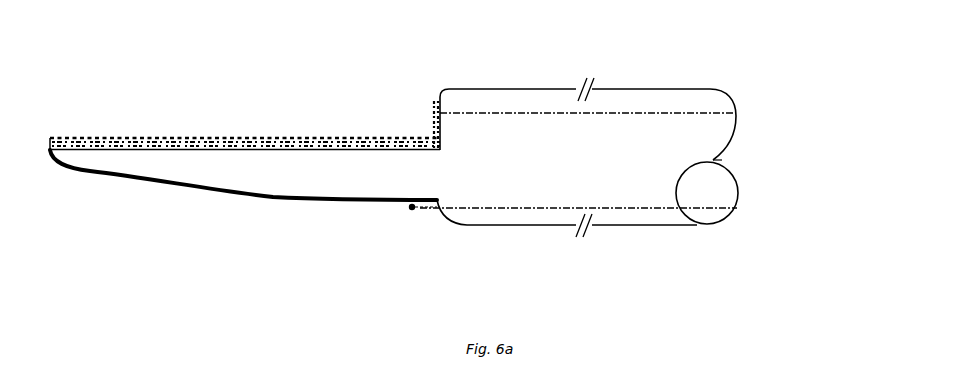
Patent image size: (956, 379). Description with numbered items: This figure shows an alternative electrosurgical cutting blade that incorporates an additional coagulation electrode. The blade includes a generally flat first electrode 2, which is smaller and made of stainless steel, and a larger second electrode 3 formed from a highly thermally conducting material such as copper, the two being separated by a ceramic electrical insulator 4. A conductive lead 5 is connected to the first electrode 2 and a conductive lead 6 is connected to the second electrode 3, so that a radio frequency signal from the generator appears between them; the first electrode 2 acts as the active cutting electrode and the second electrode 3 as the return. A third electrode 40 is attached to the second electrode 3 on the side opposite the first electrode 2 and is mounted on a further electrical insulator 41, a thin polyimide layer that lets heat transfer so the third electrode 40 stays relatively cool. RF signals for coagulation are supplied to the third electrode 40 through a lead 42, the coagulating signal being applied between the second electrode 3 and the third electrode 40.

The first electrode 2 is at (212, 131).
The second electrode 3 is at (330, 169).
The electrical insulator 4 is at (433, 88).
The conductive lead 5 is at (772, 117).
The conductive lead 6 is at (724, 160).
The third electrode 40 is at (230, 205).
The further electrical insulator 41 is at (425, 211).
The lead 42 is at (781, 210).